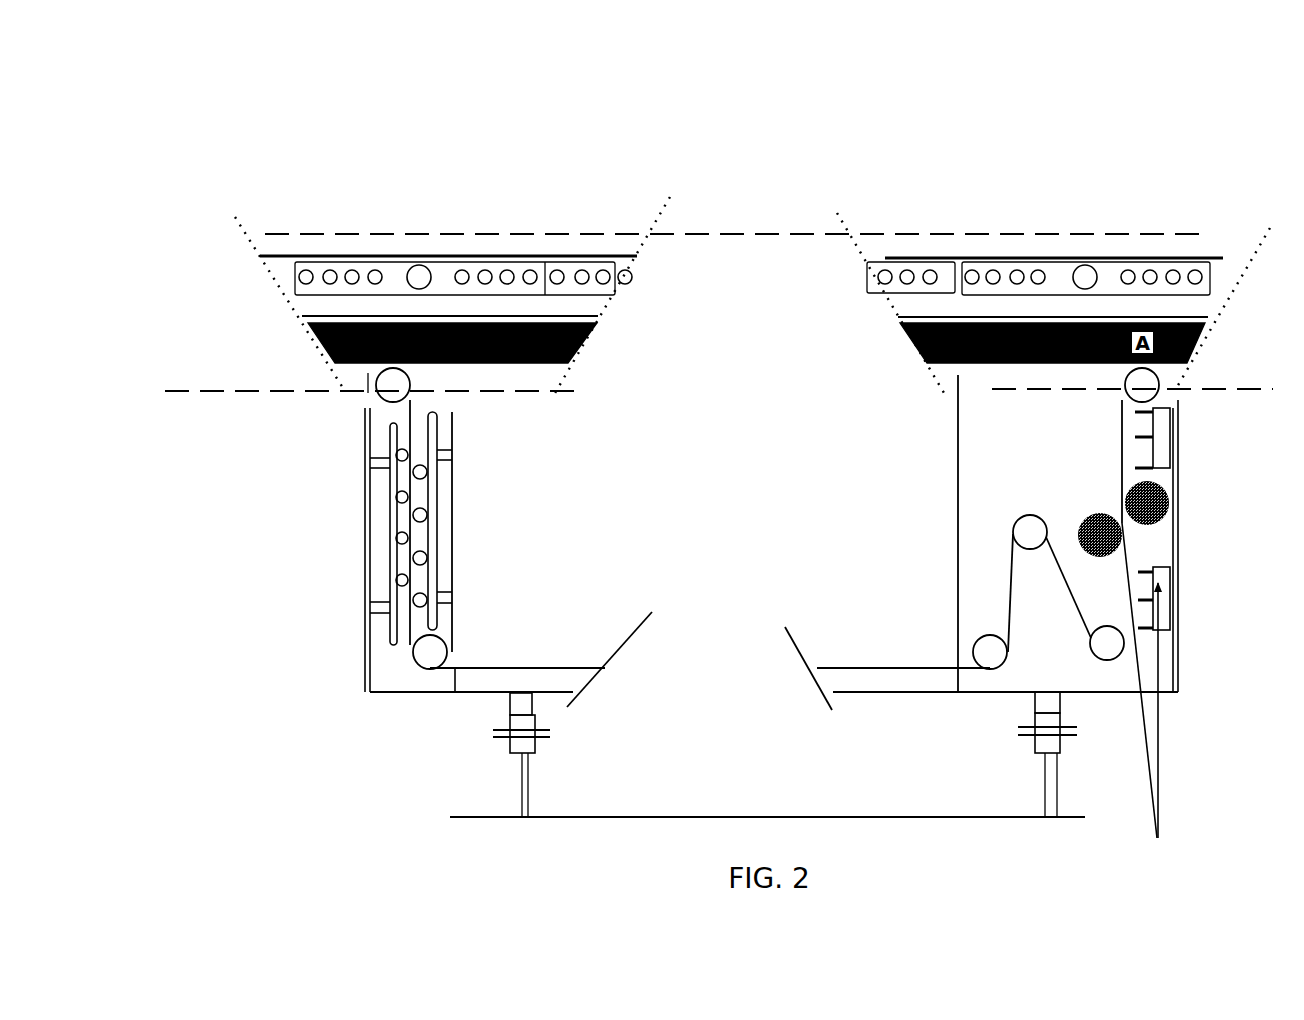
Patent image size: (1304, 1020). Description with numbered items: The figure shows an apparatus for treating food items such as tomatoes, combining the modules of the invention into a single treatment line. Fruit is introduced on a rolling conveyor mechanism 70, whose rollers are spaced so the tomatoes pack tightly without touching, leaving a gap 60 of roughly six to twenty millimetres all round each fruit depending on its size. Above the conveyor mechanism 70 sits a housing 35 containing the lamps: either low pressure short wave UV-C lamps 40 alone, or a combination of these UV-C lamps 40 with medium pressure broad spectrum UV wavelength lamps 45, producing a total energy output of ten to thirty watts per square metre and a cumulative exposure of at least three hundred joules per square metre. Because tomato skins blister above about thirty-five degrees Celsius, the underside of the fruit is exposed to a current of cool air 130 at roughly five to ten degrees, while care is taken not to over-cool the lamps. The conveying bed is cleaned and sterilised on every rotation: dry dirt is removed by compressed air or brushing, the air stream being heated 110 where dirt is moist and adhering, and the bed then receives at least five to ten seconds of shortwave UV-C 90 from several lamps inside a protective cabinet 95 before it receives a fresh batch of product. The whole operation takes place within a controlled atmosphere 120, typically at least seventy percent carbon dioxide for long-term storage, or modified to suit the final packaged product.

The housing 35 is at (395, 262).
The low pressure short wave UV-C lamp 40 is at (485, 278).
The medium pressure broad spectrum UV wavelength lamp 45 is at (420, 260).
The gap 60 is at (328, 310).
The conveyor mechanism 70 is at (303, 325).
The shortwave UV-C exposure 90 is at (390, 533).
The protective cabinet 95 is at (457, 517).
The heated air stream 110 is at (518, 672).
The controlled atmosphere 120 is at (1018, 387).
The current of cool air 130 is at (1057, 253).